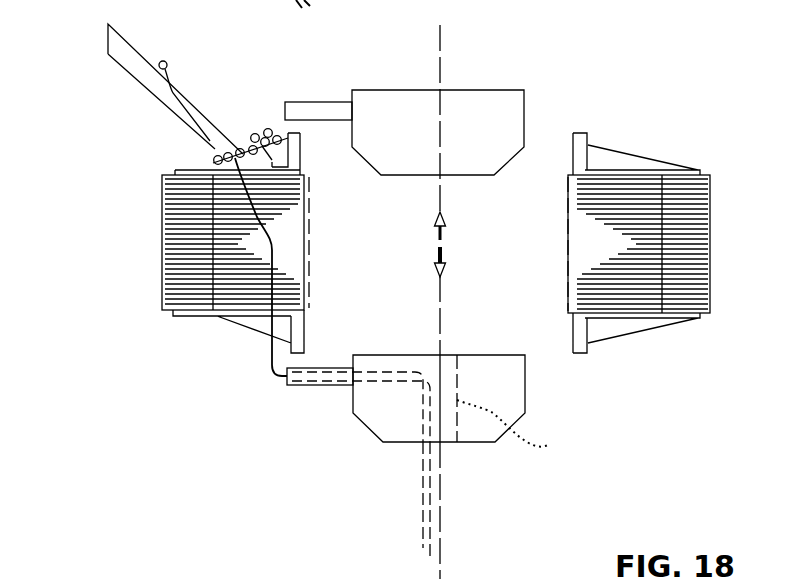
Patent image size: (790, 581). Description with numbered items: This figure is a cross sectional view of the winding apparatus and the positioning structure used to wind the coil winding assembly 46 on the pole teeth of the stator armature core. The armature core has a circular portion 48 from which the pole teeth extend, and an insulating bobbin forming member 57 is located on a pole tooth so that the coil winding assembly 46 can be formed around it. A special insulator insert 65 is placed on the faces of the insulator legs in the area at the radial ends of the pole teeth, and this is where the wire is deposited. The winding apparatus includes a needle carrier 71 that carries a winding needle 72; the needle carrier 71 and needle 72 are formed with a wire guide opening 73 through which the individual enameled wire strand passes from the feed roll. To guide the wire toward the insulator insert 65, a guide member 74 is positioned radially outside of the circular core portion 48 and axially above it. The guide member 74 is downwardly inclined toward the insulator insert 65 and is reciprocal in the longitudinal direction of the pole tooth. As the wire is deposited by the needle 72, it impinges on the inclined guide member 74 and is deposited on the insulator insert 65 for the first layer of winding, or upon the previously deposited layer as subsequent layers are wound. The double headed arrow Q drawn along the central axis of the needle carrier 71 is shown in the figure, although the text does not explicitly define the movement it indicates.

The coil winding assembly 46 is at (247, 124).
The circular portion 48 is at (162, 238).
The insulating bobbin forming member 57 is at (185, 168).
The insulator insert 65 is at (265, 130).
The needle carrier 71 is at (510, 98).
The winding needle 72 is at (330, 103).
The wire guide opening 73 is at (523, 433).
The guide member 74 is at (133, 65).
The direction arrow Q is at (455, 244).